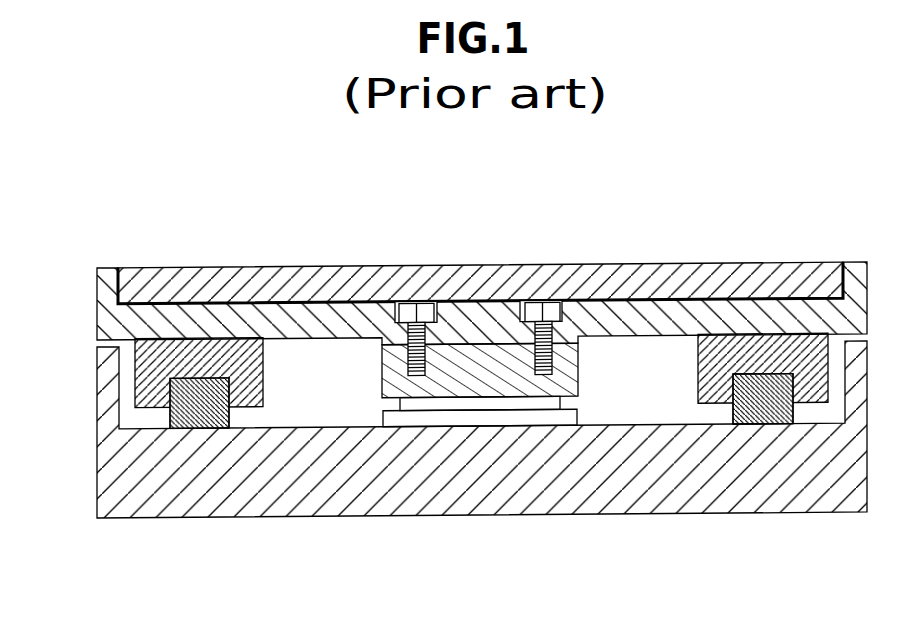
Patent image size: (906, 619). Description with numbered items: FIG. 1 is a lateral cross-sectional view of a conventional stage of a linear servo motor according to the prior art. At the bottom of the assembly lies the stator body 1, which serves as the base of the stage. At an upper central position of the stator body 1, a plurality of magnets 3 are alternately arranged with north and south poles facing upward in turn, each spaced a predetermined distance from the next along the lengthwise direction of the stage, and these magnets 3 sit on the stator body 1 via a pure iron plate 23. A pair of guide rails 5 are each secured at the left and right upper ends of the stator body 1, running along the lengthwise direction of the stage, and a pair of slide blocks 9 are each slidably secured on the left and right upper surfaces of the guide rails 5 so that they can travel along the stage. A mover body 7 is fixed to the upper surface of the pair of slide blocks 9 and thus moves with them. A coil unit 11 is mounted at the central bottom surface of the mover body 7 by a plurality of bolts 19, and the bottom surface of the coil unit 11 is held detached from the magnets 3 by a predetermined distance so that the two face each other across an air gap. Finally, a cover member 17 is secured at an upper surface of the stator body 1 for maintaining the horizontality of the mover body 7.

The stator body 1 is at (395, 483).
The magnets 3 is at (523, 405).
The guide rails 5 is at (202, 430).
The mover body 7 is at (108, 324).
The slide blocks 9 is at (137, 377).
The coil unit 11 is at (578, 364).
The cover member 17 is at (153, 278).
The bolts 19 is at (537, 304).
The pure iron plate 23 is at (484, 420).